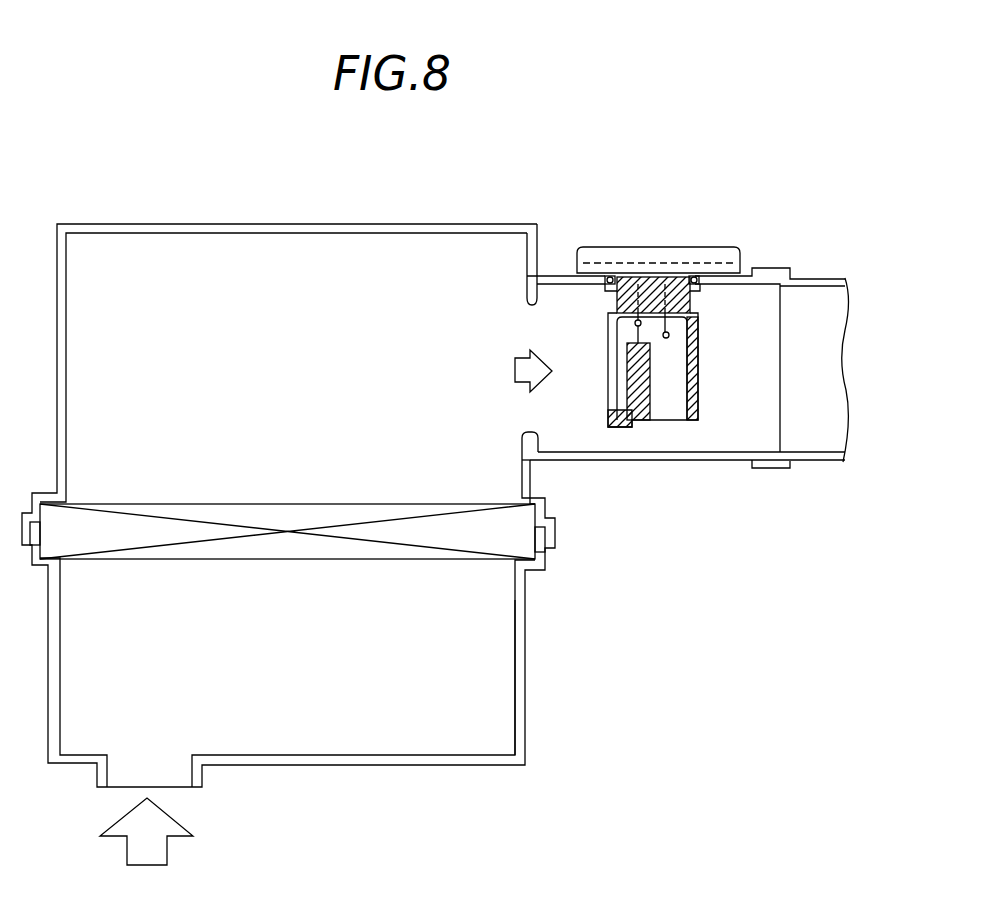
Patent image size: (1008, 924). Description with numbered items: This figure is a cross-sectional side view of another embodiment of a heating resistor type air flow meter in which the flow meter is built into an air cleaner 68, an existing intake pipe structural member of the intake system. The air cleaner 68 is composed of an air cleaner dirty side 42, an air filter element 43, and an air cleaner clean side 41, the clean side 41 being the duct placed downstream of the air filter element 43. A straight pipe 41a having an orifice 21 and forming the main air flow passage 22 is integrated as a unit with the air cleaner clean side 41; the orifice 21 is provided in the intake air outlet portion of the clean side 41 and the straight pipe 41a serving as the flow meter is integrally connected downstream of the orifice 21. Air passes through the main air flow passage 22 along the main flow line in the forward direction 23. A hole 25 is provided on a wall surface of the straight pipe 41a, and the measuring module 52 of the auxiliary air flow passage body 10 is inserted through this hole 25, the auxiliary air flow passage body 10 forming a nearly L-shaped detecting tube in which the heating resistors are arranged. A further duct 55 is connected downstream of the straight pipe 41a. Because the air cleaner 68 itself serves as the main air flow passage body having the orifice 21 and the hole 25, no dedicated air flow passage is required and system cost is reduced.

The air cleaner 68 is at (192, 224).
The air cleaner clean side 41 is at (288, 477).
The main air flow passage 22 is at (555, 325).
The hole 25 is at (607, 297).
The measuring module 52 is at (700, 246).
The auxiliary air flow passage body 10 is at (700, 337).
The forward direction of air flow 23 is at (515, 364).
The orifice 21 is at (530, 437).
The straight pipe 41a is at (615, 462).
The duct 55 is at (815, 470).
The air filter element 43 is at (278, 562).
The air cleaner dirty side 42 is at (527, 617).